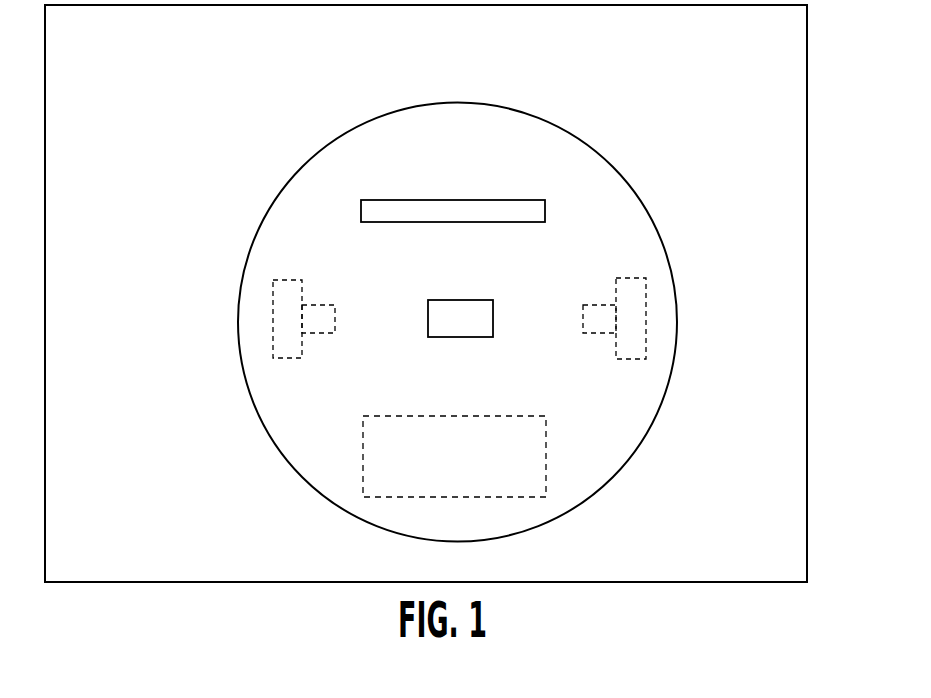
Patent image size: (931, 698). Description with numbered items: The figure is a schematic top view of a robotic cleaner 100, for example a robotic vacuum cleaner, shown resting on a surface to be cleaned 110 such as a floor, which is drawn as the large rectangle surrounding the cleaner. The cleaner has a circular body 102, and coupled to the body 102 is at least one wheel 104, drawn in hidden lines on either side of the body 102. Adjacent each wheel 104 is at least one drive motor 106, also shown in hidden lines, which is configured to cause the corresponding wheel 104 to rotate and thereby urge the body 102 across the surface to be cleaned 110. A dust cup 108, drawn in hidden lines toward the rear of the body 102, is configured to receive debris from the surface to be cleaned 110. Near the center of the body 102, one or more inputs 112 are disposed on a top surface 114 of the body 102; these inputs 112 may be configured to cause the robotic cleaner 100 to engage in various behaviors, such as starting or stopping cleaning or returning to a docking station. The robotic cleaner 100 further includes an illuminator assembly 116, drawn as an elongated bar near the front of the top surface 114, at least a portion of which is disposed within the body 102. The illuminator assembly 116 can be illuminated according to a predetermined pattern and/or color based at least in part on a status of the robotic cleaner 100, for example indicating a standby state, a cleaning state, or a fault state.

The robotic cleaner 100 is at (203, 127).
The body 102 is at (260, 420).
The wheel 104 is at (273, 330).
The drive motor 106 is at (318, 304).
The dust cup 108 is at (545, 445).
The surface to be cleaned 110 is at (808, 142).
The inputs 112 is at (493, 310).
The top surface 114 is at (434, 168).
The illuminator assembly 116 is at (472, 200).